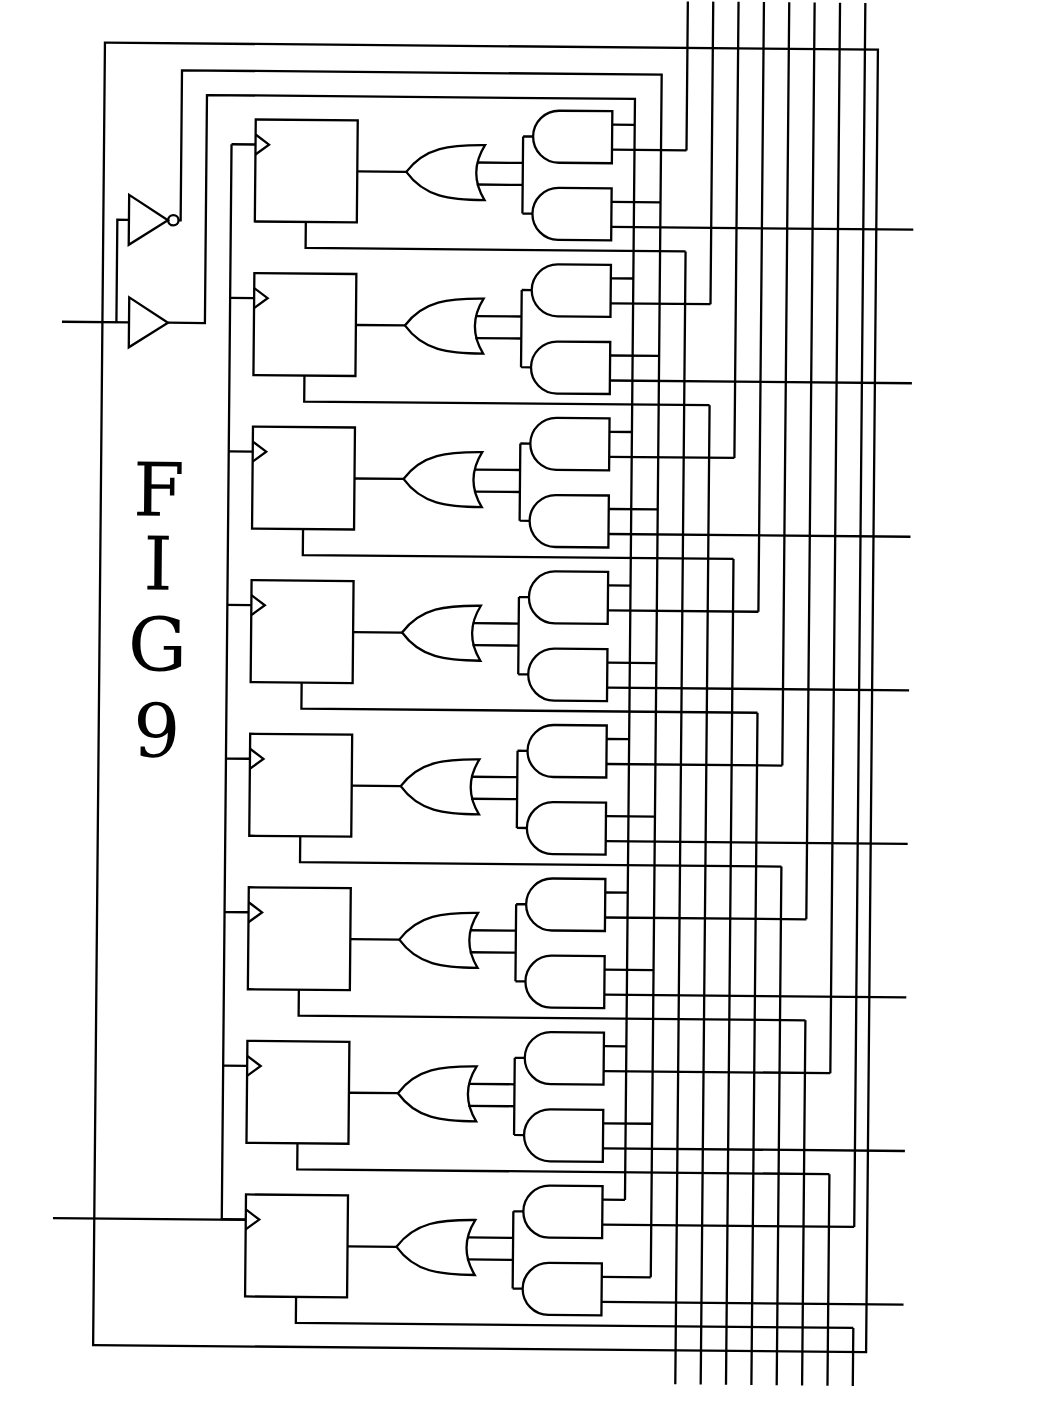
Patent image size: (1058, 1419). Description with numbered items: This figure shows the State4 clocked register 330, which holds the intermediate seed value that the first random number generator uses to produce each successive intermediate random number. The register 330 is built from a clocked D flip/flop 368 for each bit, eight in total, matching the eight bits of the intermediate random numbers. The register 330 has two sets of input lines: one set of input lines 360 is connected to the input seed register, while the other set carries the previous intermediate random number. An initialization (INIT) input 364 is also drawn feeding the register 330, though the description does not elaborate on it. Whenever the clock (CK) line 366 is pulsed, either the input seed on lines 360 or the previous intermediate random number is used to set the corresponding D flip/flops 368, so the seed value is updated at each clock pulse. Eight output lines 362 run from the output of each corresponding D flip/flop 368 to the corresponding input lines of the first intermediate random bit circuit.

The State4 clocked register 330 is at (110, 1034).
The input lines 360 is at (682, 75).
The output lines 362 is at (681, 1327).
The INIT initialization input 364 is at (92, 329).
The clock (CK) line 366 is at (88, 1226).
The clocked D flip/flop 368 is at (276, 202).